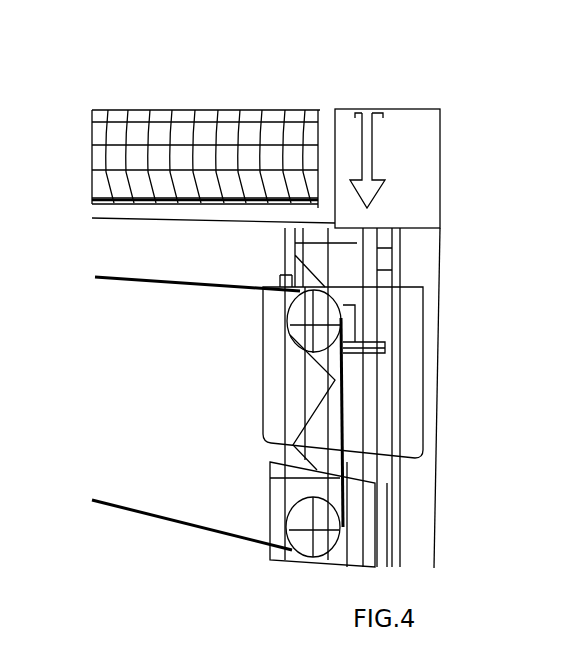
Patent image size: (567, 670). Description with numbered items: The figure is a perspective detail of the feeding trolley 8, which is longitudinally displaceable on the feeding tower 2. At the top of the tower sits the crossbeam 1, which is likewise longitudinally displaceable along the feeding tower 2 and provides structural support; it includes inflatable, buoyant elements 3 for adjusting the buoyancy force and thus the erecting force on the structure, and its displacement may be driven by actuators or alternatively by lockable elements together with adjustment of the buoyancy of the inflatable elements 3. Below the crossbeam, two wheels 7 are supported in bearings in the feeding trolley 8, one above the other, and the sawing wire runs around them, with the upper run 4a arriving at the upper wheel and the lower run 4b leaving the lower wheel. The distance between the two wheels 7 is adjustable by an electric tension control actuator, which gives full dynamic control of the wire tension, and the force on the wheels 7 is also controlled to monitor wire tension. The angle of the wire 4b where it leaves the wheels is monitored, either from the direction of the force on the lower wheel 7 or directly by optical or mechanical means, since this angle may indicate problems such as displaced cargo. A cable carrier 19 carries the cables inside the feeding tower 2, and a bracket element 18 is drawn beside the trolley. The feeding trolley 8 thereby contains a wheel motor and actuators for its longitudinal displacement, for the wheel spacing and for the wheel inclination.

The crossbeam 1 is at (402, 130).
The feeding tower 2 is at (418, 530).
The inflatable, buoyant elements 3 is at (180, 132).
The sawing wire 4a is at (125, 281).
The wire 4b is at (108, 505).
The wheels 7 is at (290, 340).
The feeding trolley 8 is at (410, 332).
The bracket 18 is at (345, 403).
The cable carrier 19 is at (370, 268).